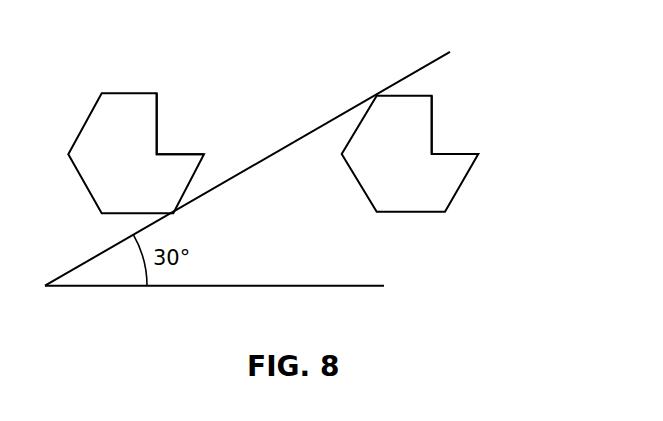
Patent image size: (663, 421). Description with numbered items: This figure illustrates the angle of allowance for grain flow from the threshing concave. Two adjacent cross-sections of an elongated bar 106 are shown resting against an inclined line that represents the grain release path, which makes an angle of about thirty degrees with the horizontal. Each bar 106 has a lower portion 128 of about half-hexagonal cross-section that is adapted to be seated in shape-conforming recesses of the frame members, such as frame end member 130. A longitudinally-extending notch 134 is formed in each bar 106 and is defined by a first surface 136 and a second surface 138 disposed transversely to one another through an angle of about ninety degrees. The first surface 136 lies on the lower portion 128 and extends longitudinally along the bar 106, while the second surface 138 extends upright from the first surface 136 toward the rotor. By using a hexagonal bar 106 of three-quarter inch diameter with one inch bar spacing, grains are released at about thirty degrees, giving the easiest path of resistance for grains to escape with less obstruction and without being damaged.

The elongated bar 106 is at (408, 93).
The lower portion 128 is at (403, 188).
The frame end member 130 is at (117, 111).
The longitudinally-extending notch 134 is at (452, 128).
The first surface 136 is at (468, 152).
The second surface 138 is at (159, 111).